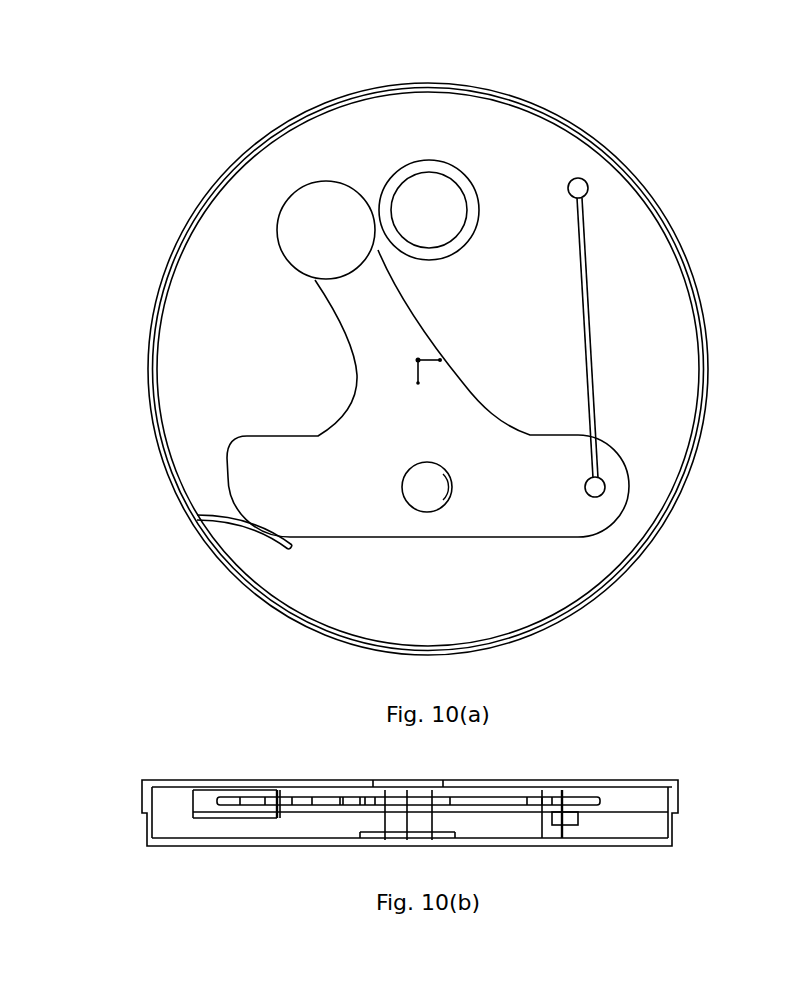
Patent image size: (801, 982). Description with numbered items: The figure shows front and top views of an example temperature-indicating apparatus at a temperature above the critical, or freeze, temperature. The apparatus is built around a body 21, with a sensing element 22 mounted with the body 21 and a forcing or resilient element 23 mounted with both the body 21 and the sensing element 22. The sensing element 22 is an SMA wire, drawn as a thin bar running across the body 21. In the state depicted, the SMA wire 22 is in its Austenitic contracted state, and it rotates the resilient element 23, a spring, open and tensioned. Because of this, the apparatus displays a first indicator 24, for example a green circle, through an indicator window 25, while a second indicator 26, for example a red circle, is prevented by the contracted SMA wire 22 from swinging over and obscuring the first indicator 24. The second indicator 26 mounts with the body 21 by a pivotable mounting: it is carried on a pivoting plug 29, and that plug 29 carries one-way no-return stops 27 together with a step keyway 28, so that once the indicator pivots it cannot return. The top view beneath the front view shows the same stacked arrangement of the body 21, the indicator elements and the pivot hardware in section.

The body 21 is at (702, 422).
The sensing element 22 is at (595, 352).
The resilient element 23 is at (245, 528).
The first indicator 24 is at (475, 190).
The indicator window 25 is at (430, 172).
The second indicator 26 is at (332, 207).
The one-way no-return stops 27 is at (443, 475).
The step keyway 28 is at (430, 462).
The pivoting plug 29 is at (420, 493).